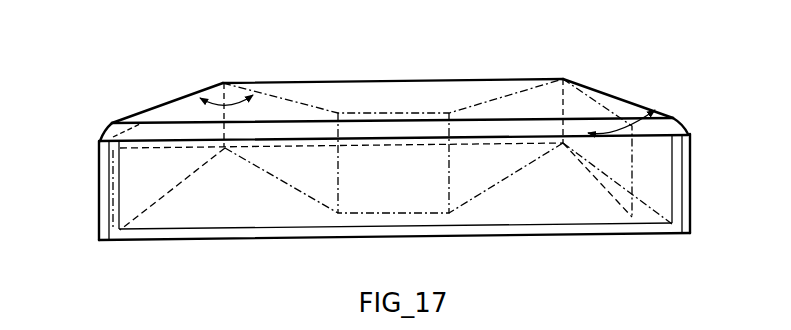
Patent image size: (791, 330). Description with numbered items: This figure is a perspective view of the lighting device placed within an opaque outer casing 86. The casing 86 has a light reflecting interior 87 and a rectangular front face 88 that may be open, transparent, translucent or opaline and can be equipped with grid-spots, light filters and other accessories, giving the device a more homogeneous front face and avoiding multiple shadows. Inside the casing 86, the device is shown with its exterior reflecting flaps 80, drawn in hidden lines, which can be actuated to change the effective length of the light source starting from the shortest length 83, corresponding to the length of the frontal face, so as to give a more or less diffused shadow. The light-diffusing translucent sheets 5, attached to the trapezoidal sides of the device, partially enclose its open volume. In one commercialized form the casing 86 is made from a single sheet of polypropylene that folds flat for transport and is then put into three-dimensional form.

The outer casing 86 is at (394, 72).
The flaps 80 is at (130, 168).
The effective length of the light source 83 is at (447, 168).
The translucent sheets 5 is at (300, 193).
The light reflecting interior 87 is at (570, 195).
The rectangular front face 88 is at (663, 180).